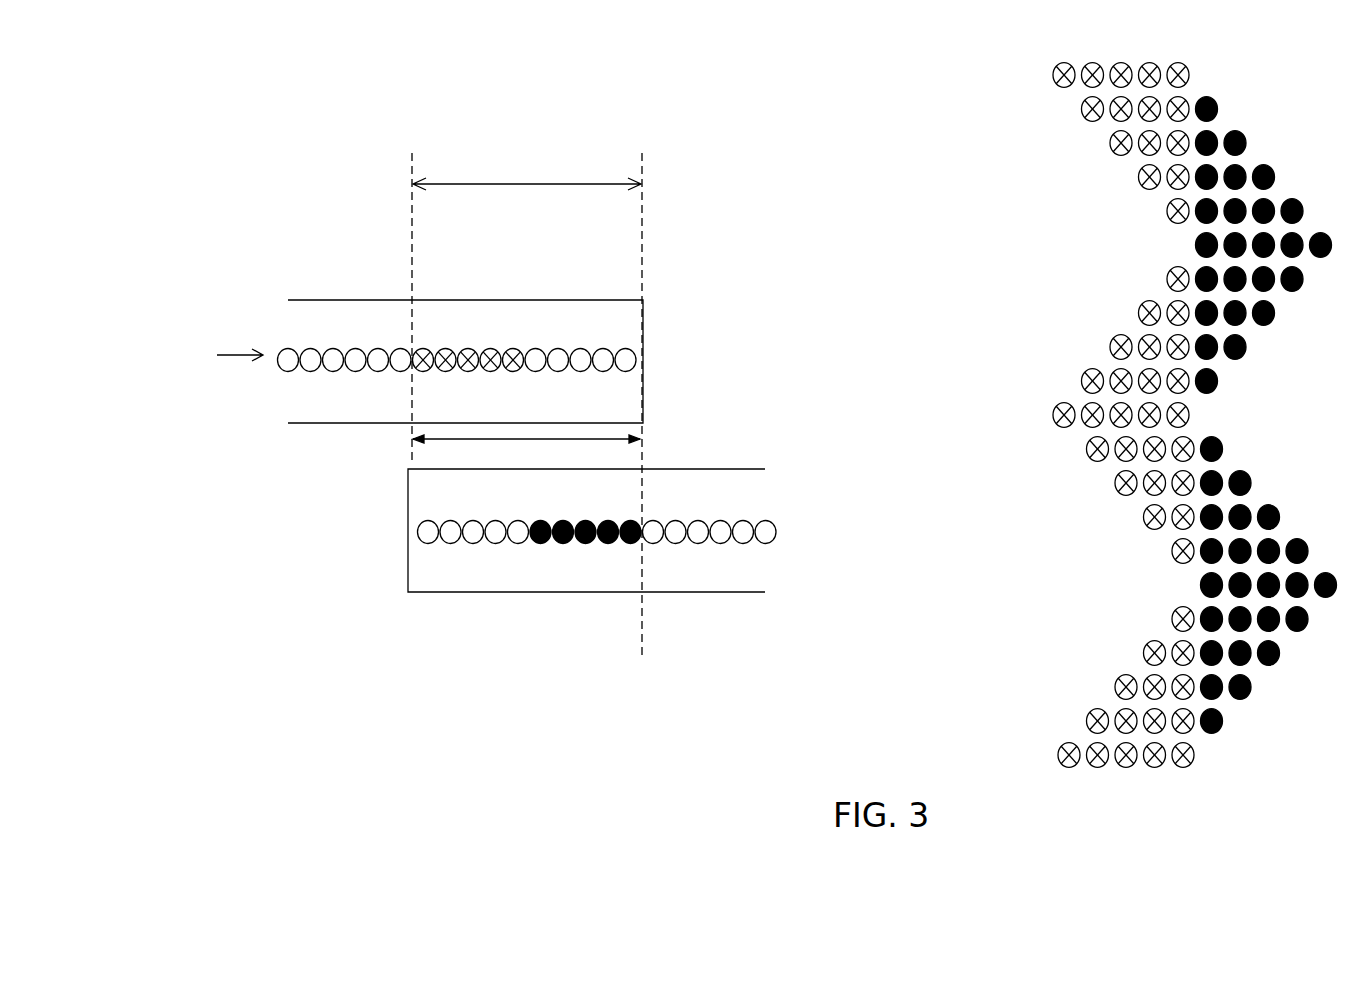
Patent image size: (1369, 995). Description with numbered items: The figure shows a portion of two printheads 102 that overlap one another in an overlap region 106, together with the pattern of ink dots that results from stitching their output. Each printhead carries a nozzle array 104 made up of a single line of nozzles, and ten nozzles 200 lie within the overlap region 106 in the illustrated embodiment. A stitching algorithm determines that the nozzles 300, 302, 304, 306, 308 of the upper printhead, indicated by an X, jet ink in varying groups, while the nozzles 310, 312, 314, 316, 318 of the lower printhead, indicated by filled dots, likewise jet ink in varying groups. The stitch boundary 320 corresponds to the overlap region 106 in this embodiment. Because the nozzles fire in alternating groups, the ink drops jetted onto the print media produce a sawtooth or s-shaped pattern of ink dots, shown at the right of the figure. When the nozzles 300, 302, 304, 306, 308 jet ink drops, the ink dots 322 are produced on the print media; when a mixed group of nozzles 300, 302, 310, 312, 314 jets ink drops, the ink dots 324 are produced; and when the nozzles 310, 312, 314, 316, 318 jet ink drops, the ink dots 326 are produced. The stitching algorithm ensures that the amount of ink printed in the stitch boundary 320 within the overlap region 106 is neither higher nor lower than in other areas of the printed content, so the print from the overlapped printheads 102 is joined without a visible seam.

The printhead 102 is at (313, 299).
The nozzle array 104 is at (203, 389).
The overlap region 106 is at (605, 183).
The nozzles 200 is at (770, 543).
The nozzle 300 is at (514, 349).
The nozzle 302 is at (490, 349).
The nozzle 304 is at (468, 349).
The nozzle 306 is at (447, 372).
The nozzle 308 is at (418, 369).
The nozzle 310 is at (541, 543).
The nozzle 312 is at (563, 543).
The nozzle 314 is at (586, 543).
The nozzle 316 is at (608, 543).
The nozzle 318 is at (633, 548).
The stitch boundary 320 is at (607, 442).
The ink dots 322 is at (1035, 81).
The ink dots 324 is at (1120, 184).
The ink dots 326 is at (1178, 253).